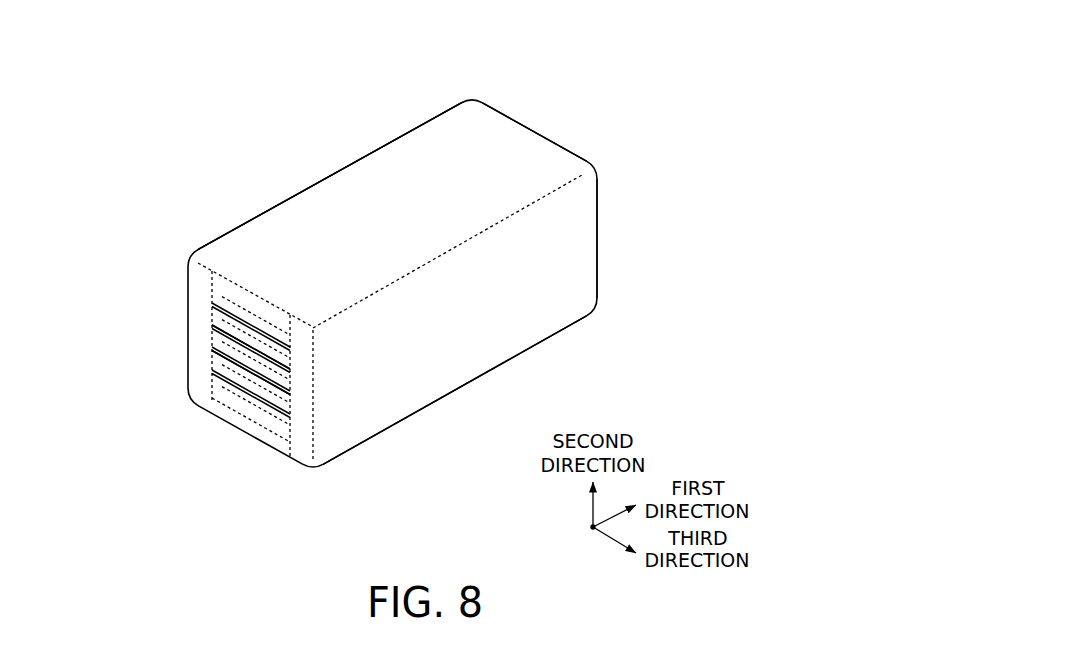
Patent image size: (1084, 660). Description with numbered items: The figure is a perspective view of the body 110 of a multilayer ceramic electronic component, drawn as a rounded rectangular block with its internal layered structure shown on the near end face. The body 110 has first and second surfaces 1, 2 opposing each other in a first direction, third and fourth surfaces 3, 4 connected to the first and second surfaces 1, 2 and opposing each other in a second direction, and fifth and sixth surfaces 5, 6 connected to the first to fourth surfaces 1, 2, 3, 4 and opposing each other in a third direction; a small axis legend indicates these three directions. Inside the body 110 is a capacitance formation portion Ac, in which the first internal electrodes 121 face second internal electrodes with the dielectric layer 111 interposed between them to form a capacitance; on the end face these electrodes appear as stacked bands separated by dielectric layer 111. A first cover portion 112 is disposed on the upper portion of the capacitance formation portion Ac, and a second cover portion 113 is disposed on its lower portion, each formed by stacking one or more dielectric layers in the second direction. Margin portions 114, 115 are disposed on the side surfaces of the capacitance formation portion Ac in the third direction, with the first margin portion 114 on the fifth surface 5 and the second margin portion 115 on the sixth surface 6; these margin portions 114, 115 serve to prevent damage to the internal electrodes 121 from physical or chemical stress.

The body 110 is at (205, 43).
The first surface 1 is at (252, 430).
The second surface 2 is at (525, 128).
The third surface 3 is at (422, 163).
The fourth surface 4 is at (420, 388).
The fifth surface 5 is at (285, 202).
The sixth surface 6 is at (533, 307).
The dielectric layer 111 is at (228, 354).
The first cover portion 112 is at (228, 289).
The second cover portion 113 is at (212, 412).
The first margin portion 114 is at (200, 382).
The second margin portion 115 is at (313, 450).
The first internal electrode 121 is at (228, 315).
The capacitance formation portion Ac is at (293, 402).